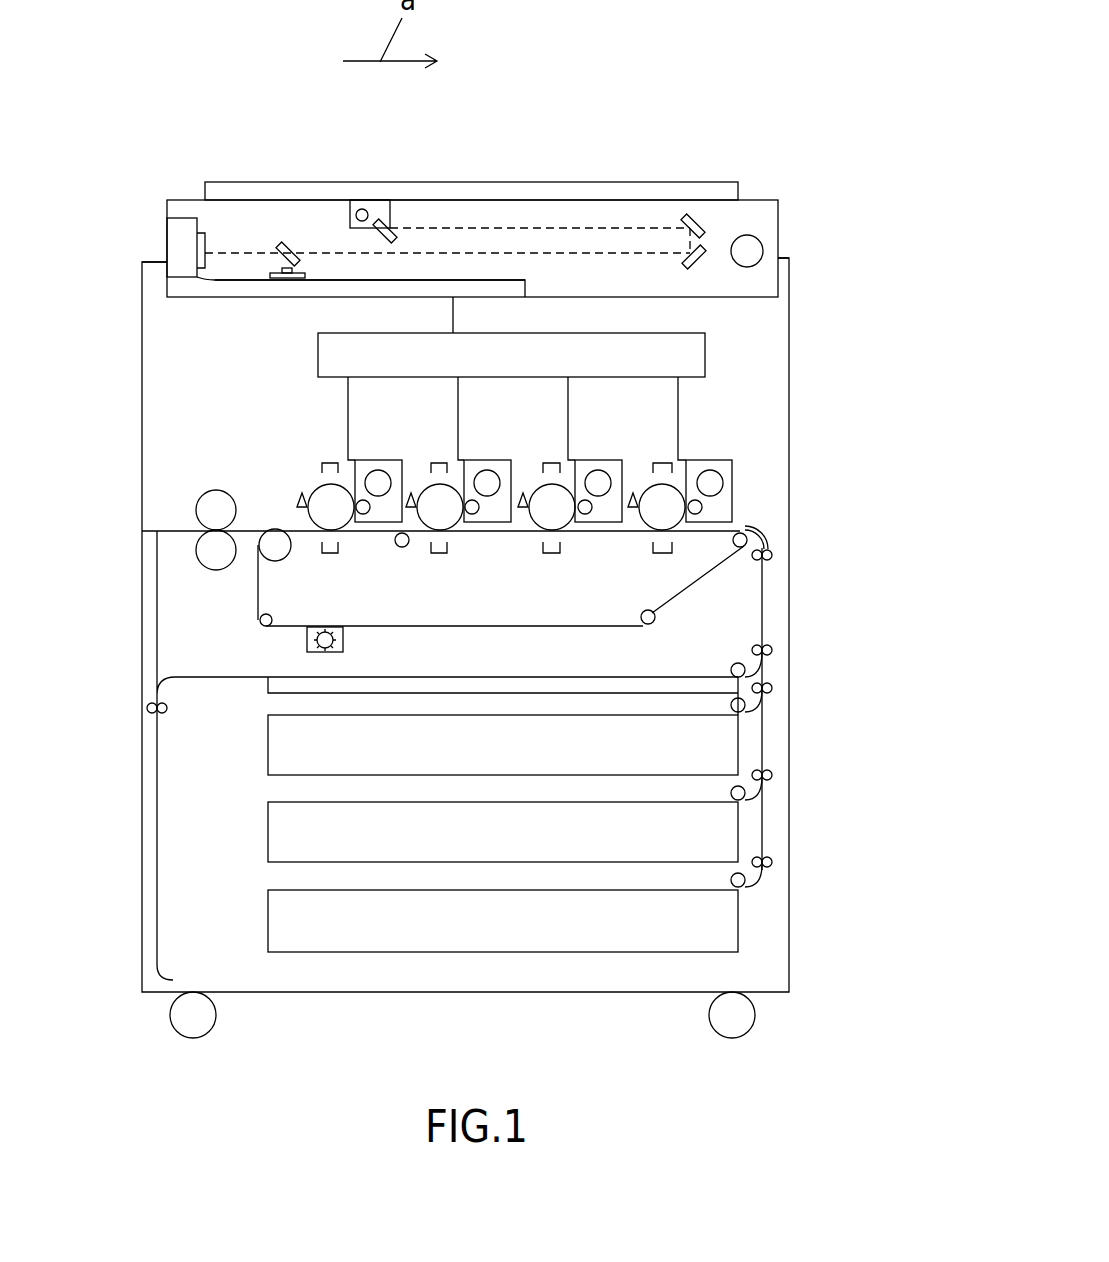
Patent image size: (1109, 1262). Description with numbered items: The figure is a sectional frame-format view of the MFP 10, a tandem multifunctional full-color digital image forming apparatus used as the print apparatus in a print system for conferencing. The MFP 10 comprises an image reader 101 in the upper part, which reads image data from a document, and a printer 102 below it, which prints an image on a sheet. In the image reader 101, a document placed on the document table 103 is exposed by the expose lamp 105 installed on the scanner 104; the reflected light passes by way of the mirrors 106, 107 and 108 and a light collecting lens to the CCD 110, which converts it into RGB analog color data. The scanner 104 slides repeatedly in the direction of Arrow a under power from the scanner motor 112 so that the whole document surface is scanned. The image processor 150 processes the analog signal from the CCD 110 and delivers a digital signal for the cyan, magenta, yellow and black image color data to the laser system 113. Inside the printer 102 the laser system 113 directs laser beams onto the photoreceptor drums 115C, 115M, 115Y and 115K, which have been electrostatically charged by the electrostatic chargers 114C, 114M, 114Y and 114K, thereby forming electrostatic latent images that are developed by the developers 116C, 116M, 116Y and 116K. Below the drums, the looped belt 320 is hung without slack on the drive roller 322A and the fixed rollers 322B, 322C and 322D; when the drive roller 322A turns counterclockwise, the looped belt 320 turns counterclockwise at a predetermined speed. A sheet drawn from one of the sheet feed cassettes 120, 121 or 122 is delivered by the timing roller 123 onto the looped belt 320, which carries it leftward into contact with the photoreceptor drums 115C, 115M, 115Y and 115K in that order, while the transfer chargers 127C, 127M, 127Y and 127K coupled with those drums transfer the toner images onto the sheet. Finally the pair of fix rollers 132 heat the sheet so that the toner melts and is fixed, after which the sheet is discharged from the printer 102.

The MFP 10 is at (795, 23).
The image reader 101 is at (765, 218).
The printer 102 is at (767, 362).
The document table 103 is at (525, 190).
The scanner 104 is at (378, 218).
The expose lamp 105 is at (362, 208).
The mirror 106 is at (687, 213).
The mirror 107 is at (698, 247).
The mirror 108 is at (283, 247).
The CCD 110 is at (278, 272).
The scanner motor 112 is at (745, 252).
The laser system 113 is at (690, 347).
The electrostatic charger 114K is at (332, 460).
The electrostatic charger 114Y is at (442, 460).
The electrostatic charger 114M is at (552, 460).
The electrostatic charger 114C is at (665, 460).
The photoreceptor drum 115K is at (313, 495).
The photoreceptor drum 115Y is at (425, 522).
The photoreceptor drum 115M is at (533, 530).
The photoreceptor drum 115C is at (680, 528).
The developer 116K is at (368, 460).
The developer 116Y is at (478, 460).
The developer 116M is at (587, 460).
The developer 116C is at (710, 460).
The sheet feed cassette 120 is at (268, 768).
The sheet feed cassette 121 is at (268, 855).
The sheet feed cassette 122 is at (268, 940).
The timing roller 123 is at (772, 555).
The transfer charger 127K is at (330, 555).
The transfer charger 127Y is at (442, 555).
The transfer charger 127M is at (552, 555).
The transfer charger 127C is at (663, 555).
The fix rollers 132 is at (212, 550).
The image processor 150 is at (235, 288).
The looped belt 320 is at (465, 627).
The drive roller 322A is at (272, 550).
The fixed roller 322B is at (263, 623).
The fixed roller 322C is at (643, 615).
The fixed roller 322D is at (745, 528).